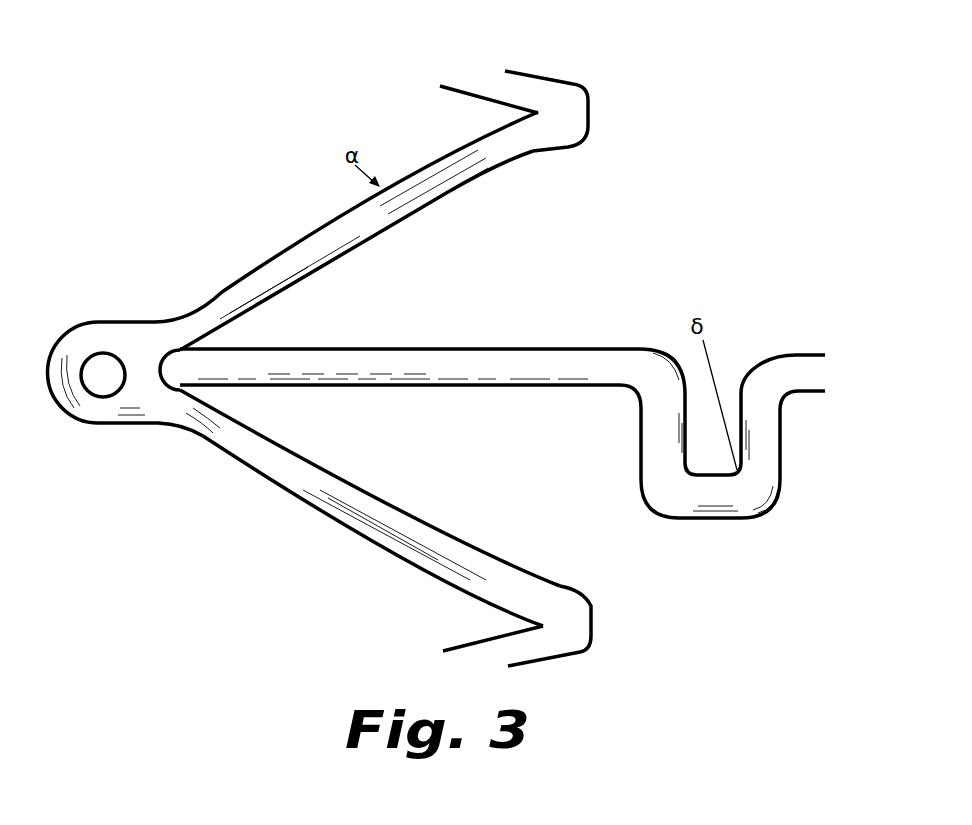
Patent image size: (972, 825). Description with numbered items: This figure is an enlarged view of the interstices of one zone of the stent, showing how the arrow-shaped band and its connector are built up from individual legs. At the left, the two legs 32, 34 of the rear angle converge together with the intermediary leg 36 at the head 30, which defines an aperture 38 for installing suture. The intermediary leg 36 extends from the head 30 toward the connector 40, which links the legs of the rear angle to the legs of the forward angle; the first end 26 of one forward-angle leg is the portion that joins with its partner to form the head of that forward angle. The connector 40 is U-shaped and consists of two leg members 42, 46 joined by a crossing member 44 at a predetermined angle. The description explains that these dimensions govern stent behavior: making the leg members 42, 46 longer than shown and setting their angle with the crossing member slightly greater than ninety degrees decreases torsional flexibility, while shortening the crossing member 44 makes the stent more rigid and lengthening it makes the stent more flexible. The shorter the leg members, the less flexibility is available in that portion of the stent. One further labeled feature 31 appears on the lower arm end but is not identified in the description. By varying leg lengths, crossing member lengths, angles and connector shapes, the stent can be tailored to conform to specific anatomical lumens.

The first end 26 is at (795, 377).
The head 30 is at (44, 395).
The lower arm end 31 is at (569, 619).
The leg 32 is at (264, 255).
The leg 34 is at (562, 110).
The intermediary leg 36 is at (422, 375).
The aperture 38 is at (93, 362).
The connector 40 is at (707, 480).
The leg member 42 is at (642, 444).
The crossing member 44 is at (704, 492).
The leg member 46 is at (764, 475).